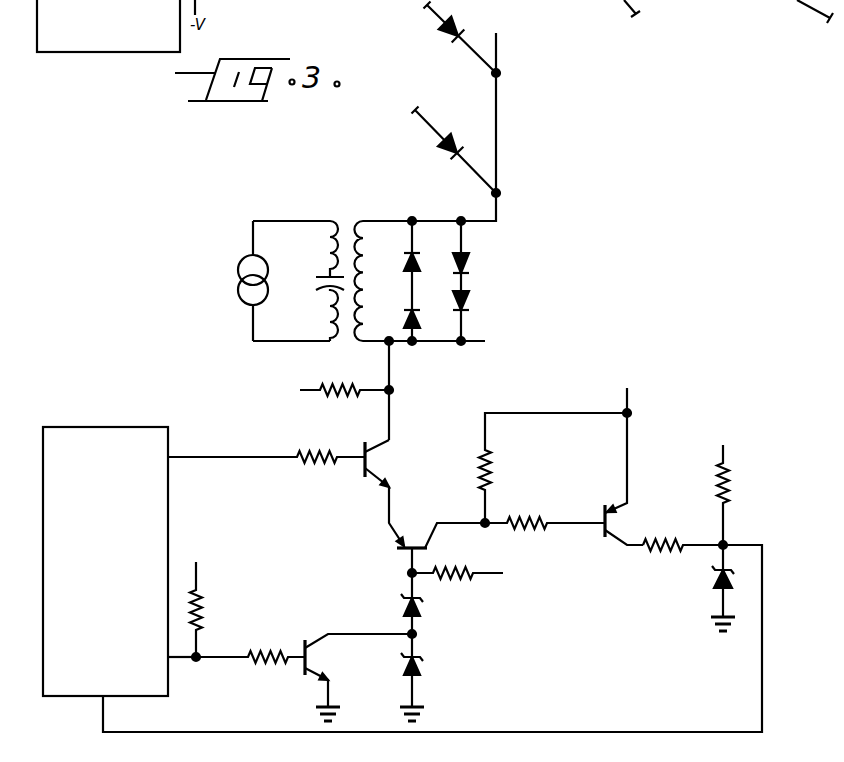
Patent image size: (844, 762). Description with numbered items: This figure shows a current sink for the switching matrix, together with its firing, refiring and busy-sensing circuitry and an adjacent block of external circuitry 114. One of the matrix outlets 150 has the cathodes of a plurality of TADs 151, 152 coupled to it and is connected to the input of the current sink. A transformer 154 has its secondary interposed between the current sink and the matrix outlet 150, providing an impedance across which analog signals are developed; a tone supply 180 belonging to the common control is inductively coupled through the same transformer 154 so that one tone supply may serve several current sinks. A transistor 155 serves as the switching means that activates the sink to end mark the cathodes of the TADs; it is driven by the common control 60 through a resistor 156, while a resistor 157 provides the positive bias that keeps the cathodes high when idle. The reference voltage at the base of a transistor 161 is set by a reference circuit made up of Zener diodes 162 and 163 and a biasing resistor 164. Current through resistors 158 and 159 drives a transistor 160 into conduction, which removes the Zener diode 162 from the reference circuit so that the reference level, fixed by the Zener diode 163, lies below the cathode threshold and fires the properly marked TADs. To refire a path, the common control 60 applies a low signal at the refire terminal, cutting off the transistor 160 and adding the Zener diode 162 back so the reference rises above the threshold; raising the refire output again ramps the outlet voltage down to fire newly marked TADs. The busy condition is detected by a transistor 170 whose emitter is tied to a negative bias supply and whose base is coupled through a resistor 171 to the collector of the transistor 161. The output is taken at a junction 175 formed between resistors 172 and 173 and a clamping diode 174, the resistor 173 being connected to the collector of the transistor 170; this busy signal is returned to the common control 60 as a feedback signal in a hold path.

The external circuitry 114 is at (70, 56).
The common control 60 is at (114, 427).
The matrix outlet 150 is at (498, 203).
The TAD 151 is at (462, 97).
The TAD 152 is at (445, 35).
The transformer 154 is at (346, 237).
The transistor 155 is at (362, 468).
The resistor 156 is at (314, 470).
The resistor 157 is at (341, 398).
The resistor 158 is at (205, 612).
The resistor 159 is at (280, 644).
The transistor 160 is at (300, 672).
The transistor 161 is at (403, 555).
The Zener diode 162 is at (428, 668).
The Zener diode 163 is at (428, 612).
The biasing resistor 164 is at (442, 573).
The transistor 170 is at (600, 538).
The resistor 171 is at (531, 516).
The resistor 172 is at (733, 487).
The resistor 173 is at (680, 516).
The clamping diode 174 is at (716, 585).
The junction 175 is at (733, 544).
The tone supply 180 is at (238, 270).